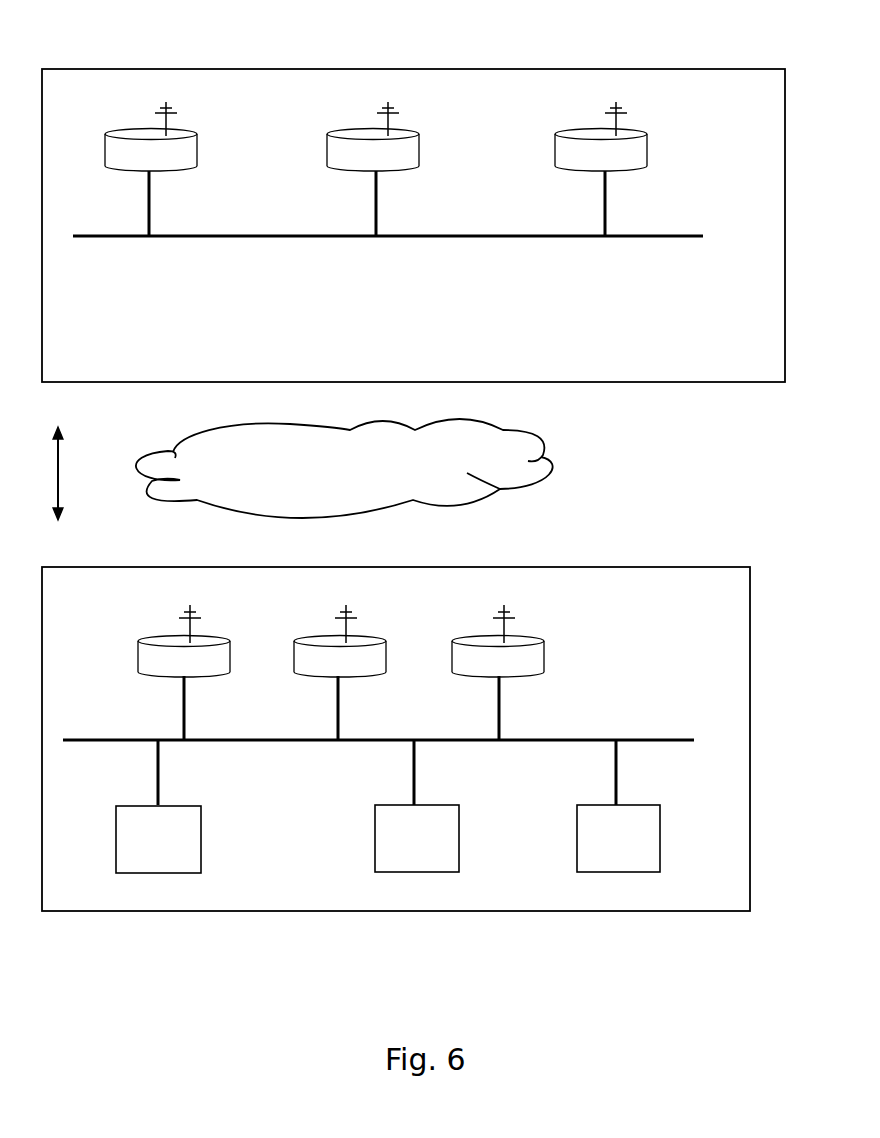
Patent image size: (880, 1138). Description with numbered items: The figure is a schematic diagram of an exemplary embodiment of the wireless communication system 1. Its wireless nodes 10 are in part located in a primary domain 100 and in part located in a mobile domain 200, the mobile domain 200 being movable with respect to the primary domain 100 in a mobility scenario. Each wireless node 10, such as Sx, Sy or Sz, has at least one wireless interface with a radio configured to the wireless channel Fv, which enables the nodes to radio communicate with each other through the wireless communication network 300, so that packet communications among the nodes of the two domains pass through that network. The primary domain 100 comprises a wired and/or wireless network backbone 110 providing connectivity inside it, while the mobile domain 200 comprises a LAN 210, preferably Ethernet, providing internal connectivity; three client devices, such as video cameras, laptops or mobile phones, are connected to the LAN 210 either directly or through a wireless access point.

The wireless communication system 1 is at (112, 955).
The wireless node 10 is at (398, 421).
The primary domain 100 is at (632, 69).
The network backbone 110 is at (650, 236).
The mobile domain 200 is at (653, 567).
The LAN 210 is at (562, 739).
The wireless communication network 300 is at (555, 465).